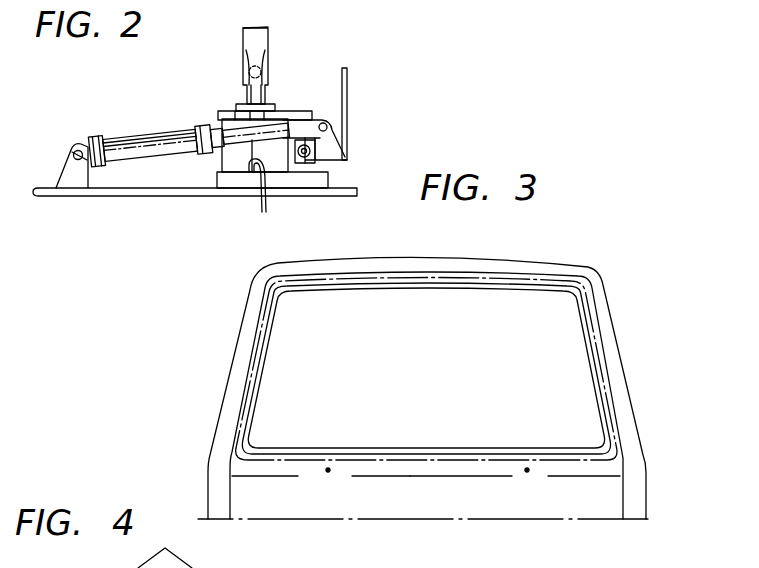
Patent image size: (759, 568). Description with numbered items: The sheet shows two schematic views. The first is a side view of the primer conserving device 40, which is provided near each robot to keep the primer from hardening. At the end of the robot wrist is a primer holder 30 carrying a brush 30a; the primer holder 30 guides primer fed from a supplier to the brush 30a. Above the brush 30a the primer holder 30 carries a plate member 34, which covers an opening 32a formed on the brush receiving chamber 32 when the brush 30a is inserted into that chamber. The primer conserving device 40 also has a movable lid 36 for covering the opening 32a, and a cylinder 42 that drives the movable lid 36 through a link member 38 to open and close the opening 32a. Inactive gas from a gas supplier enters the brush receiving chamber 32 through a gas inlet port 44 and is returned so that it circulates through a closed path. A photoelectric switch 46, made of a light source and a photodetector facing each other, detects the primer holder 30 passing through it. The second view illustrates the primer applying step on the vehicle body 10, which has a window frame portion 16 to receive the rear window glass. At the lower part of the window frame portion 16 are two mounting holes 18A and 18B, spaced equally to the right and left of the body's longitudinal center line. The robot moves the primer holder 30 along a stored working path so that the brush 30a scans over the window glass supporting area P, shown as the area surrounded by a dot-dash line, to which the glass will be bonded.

In FIG. 3, the vehicle body 10 is at (503, 270).
In FIG. 3, the window frame portion 16 is at (238, 464).
In FIG. 3, the mounting hole 18A is at (328, 472).
In FIG. 3, the mounting hole 18B is at (528, 472).
In FIG. 3, the window glass supporting area P is at (490, 470).
In FIG. 2, the primer holder 30 is at (276, 66).
In FIG. 2, the brush 30a is at (257, 146).
In FIG. 2, the brush receiving chamber 32 is at (222, 161).
In FIG. 2, the opening 32a is at (218, 110).
In FIG. 2, the plate member 34 is at (238, 106).
In FIG. 2, the movable lid 36 is at (343, 88).
In FIG. 2, the link member 38 is at (338, 150).
In FIG. 2, the primer conserving device 40 is at (176, 120).
In FIG. 2, the cylinder 42 is at (129, 140).
In FIG. 2, the gas inlet port 44 is at (249, 168).
In FIG. 2, the photoelectric switch 46 is at (246, 54).